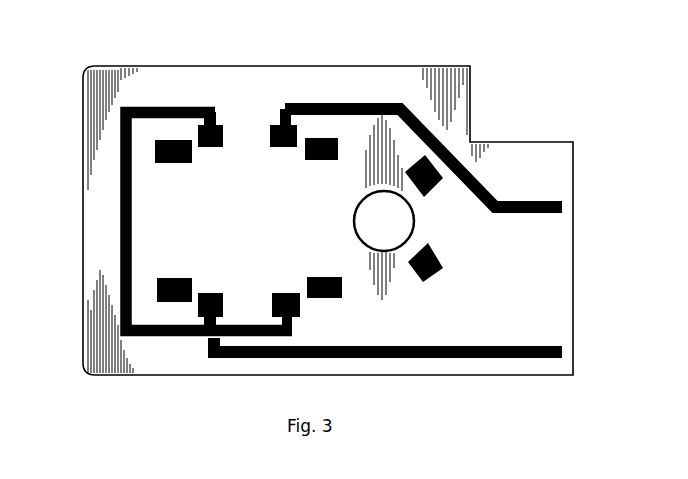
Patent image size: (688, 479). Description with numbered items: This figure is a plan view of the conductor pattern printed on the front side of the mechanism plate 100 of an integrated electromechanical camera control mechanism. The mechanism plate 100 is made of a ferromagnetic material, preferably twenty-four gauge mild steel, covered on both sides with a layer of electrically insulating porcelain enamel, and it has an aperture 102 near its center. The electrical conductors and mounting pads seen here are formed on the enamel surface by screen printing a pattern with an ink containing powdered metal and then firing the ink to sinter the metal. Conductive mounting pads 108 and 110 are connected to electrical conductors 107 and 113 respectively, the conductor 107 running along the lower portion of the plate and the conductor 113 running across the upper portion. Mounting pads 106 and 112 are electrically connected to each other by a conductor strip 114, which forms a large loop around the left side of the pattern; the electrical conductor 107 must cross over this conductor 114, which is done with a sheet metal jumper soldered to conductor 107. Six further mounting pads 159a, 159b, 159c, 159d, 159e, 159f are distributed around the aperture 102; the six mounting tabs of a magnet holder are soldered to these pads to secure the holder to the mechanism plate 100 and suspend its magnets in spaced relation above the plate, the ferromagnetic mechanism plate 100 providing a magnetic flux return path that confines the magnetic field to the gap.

The mechanism plate 100 is at (573, 270).
The aperture 102 is at (366, 238).
The mounting pad 106 is at (283, 293).
The electrical conductor 107 is at (388, 346).
The conductive mounting pad 108 is at (208, 293).
The conductive mounting pad 110 is at (280, 147).
The mounting pad 112 is at (212, 147).
The electrical conductor 113 is at (388, 103).
The conductor strip 114 is at (120, 232).
The mounting pad 159a is at (170, 163).
The mounting pad 159b is at (170, 278).
The mounting pad 159c is at (315, 160).
The mounting pad 159d is at (322, 277).
The mounting pad 159e is at (440, 273).
The mounting pad 159f is at (432, 197).